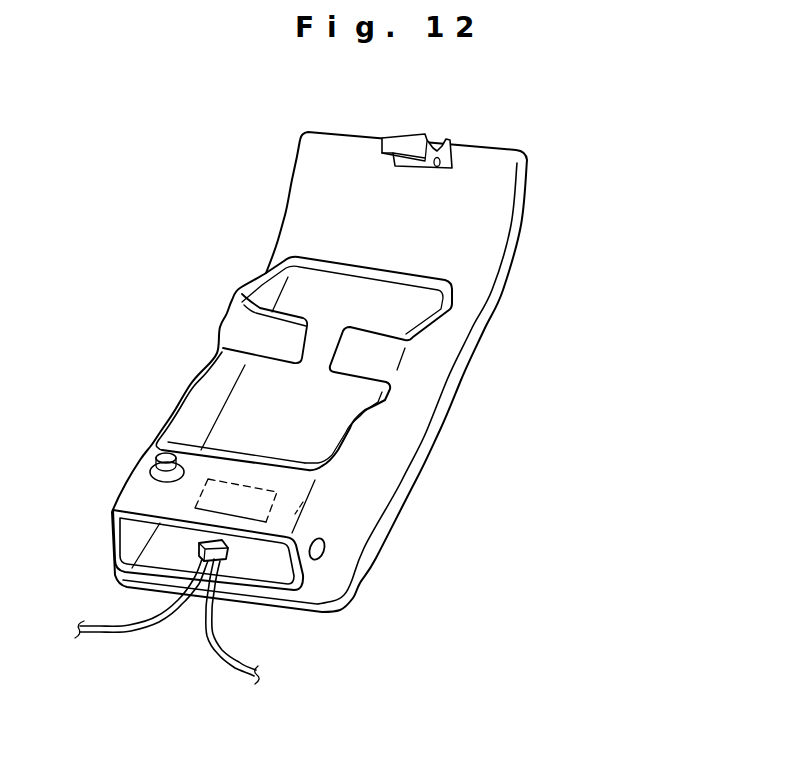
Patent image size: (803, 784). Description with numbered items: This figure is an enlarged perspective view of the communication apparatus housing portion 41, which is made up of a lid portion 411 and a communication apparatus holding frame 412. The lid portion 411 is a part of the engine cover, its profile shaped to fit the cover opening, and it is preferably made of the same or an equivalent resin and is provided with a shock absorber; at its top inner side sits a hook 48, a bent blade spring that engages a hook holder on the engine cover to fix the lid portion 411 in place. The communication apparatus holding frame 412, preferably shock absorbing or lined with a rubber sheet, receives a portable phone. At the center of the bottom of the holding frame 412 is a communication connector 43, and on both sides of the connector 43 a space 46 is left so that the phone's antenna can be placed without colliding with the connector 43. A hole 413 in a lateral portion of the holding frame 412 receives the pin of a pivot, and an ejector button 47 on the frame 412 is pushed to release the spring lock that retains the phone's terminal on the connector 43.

The communication apparatus housing portion 41 is at (534, 291).
The lid portion 411 is at (478, 207).
The communication apparatus holding frame 412 is at (350, 483).
The hole 413 is at (322, 548).
The communication connector 43 is at (245, 547).
The space 46 is at (167, 552).
The ejector button 47 is at (153, 462).
The hook 48 is at (410, 140).